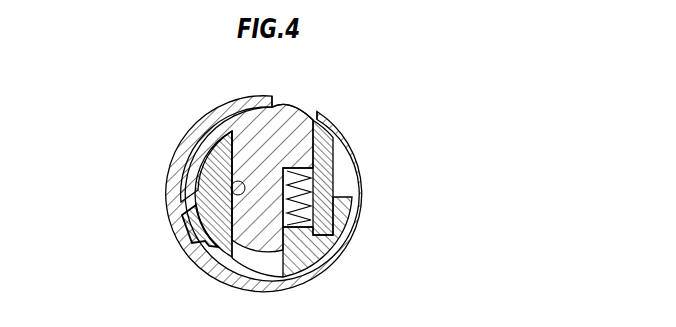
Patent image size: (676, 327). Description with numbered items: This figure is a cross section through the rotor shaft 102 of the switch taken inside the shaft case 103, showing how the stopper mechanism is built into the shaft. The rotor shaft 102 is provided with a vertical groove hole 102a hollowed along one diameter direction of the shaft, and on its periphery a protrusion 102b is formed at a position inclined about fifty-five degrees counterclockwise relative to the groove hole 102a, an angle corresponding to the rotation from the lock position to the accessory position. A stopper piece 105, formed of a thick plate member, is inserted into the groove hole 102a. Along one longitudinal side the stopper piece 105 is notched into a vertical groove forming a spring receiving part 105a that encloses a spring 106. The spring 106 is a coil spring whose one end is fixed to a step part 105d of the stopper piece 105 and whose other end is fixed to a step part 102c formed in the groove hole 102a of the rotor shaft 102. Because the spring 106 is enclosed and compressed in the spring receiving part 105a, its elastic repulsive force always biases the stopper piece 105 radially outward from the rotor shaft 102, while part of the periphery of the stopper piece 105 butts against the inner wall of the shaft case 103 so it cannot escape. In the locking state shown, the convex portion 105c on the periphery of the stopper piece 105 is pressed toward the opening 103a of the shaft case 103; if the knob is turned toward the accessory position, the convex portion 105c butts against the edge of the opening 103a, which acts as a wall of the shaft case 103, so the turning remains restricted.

The rotor shaft 102 is at (221, 143).
The groove hole 102a is at (228, 178).
The protrusion 102b is at (196, 236).
The step part 102c is at (318, 252).
The shaft case 103 is at (356, 180).
The opening 103a is at (312, 123).
The stopper piece 105 is at (252, 246).
The spring receiving part 105a is at (313, 198).
The convex portion 105c is at (280, 108).
The step part 105d is at (318, 172).
The spring 106 is at (308, 203).